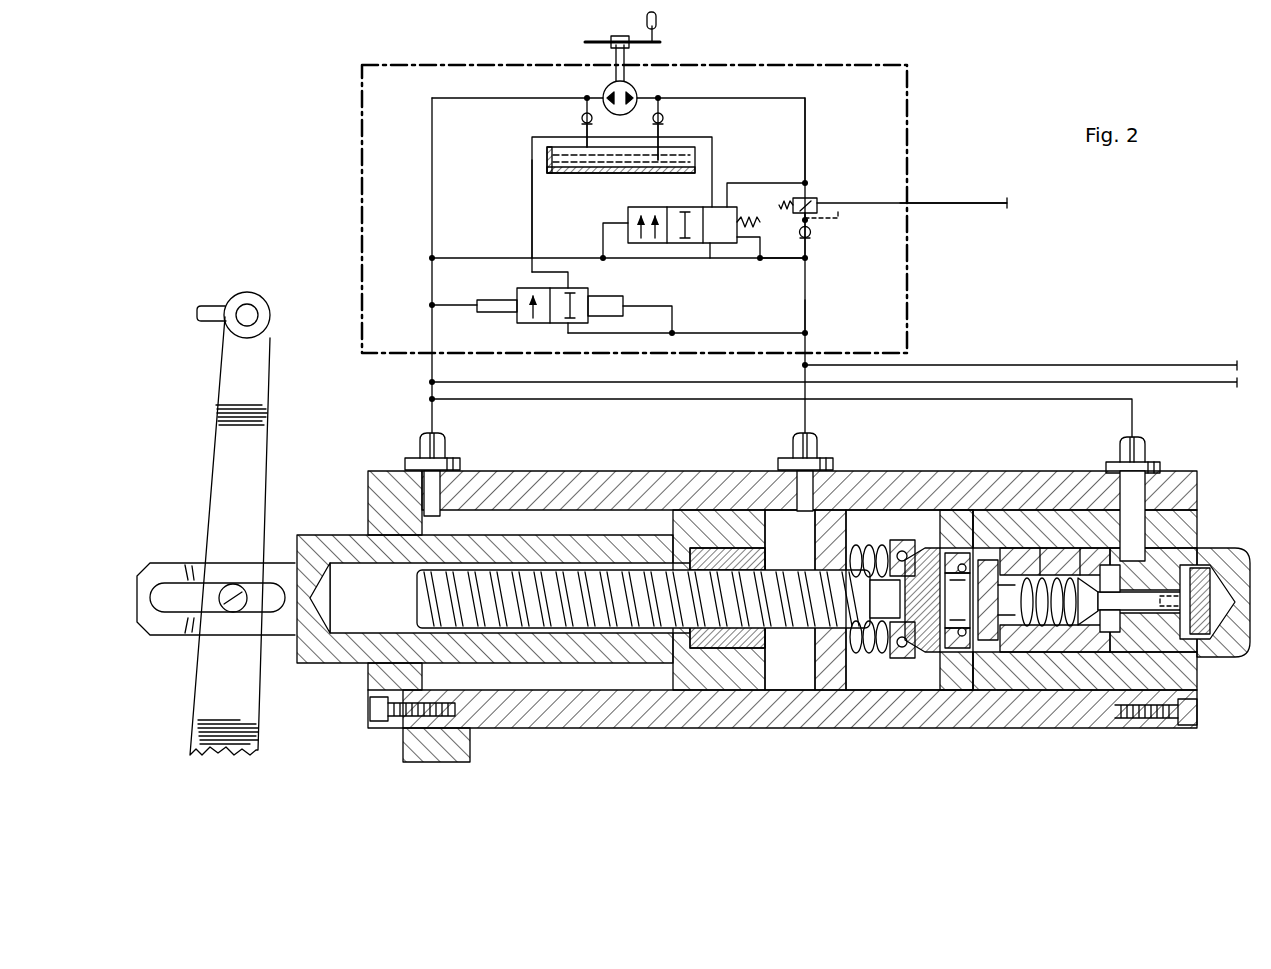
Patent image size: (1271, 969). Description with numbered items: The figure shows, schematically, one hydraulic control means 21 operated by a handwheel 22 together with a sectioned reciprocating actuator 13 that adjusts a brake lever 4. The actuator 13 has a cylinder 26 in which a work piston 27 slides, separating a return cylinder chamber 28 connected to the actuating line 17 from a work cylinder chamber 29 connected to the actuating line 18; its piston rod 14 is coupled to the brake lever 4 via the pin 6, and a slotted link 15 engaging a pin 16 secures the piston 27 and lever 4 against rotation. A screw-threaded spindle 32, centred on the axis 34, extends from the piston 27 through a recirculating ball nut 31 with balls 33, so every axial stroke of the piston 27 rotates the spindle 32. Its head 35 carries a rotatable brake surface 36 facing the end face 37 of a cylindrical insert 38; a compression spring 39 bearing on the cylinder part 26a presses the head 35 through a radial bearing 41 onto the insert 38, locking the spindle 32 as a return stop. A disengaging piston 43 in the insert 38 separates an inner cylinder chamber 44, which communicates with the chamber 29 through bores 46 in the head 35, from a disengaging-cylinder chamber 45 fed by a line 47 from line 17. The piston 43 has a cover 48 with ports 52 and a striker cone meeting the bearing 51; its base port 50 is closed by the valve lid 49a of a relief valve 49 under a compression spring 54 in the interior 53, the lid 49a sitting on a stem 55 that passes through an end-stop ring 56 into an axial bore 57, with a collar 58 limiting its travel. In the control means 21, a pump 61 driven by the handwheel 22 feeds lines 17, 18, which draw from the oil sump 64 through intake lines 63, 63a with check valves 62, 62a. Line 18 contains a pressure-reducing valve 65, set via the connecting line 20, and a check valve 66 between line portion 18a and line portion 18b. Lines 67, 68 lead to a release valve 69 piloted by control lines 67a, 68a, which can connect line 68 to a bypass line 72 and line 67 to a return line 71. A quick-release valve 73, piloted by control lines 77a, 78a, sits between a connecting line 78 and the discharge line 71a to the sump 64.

The brake lever 4 is at (200, 700).
The pin 6 is at (212, 306).
The hydraulic reciprocating actuator 13 is at (1214, 471).
The piston rod 14 is at (318, 665).
The link 15 is at (171, 564).
The pin 16 is at (233, 584).
The actuating line 17 is at (432, 279).
The actuating line 18 is at (812, 153).
The line portion 18a is at (808, 118).
The line portion 18b is at (808, 316).
The connecting line 20 is at (968, 202).
The hydraulic control means 21 is at (914, 106).
The handwheel 22 is at (660, 35).
The cylinder 26 is at (520, 727).
The cylinder part 26a is at (815, 656).
The work piston 27 is at (730, 692).
The return cylinder chamber 28 is at (555, 712).
The work cylinder chamber 29 is at (788, 692).
The recirculating ball nut 31 is at (766, 636).
The screw-threaded spindle 32 is at (424, 611).
The balls 33 is at (766, 560).
The axis 34 is at (345, 598).
The head 35 is at (925, 692).
The rotatable brake surface 36 is at (968, 510).
The end face 37 is at (968, 692).
The cylindrical insert 38 is at (1078, 548).
The compression spring 39 is at (875, 660).
The radial bearing 41 is at (915, 660).
The disengaging piston 43 is at (1100, 548).
The inner cylinder chamber 44 is at (990, 692).
The disengaging-cylinder chamber 45 is at (1100, 692).
The bores 46 is at (925, 548).
The line 47 is at (602, 400).
The cover 48 is at (1015, 692).
The relief valve 49 is at (1040, 692).
The valve lid 49a is at (1068, 692).
The port 50 is at (1108, 581).
The bearing 51 is at (955, 692).
The ports 52 is at (1004, 548).
The interior 53 is at (1028, 548).
The compression spring 54 is at (1055, 548).
The stem 55 is at (1110, 628).
The end-stop ring 56 is at (1200, 570).
The axial bore 57 is at (1225, 560).
The collar 58 is at (1203, 657).
The pump 61 is at (604, 92).
The check valve 62 is at (581, 118).
The check valve 62a is at (664, 118).
The intake line 63 is at (587, 132).
The intake line 63a is at (658, 131).
The oil sump 64 is at (570, 174).
The pressure-reducing valve 65 is at (816, 197).
The check valve 66 is at (811, 236).
The line 67 is at (491, 258).
The control line 67a is at (603, 247).
The line 68 is at (781, 262).
The control line 68a is at (758, 262).
The release valve 69 is at (620, 210).
The return line 71 is at (712, 150).
The discharge line 71a is at (532, 180).
The bypass line 72 is at (763, 183).
The quick-release valve 73 is at (512, 291).
The control line 77a is at (461, 312).
The connecting line 78 is at (697, 333).
The control line 78a is at (650, 306).